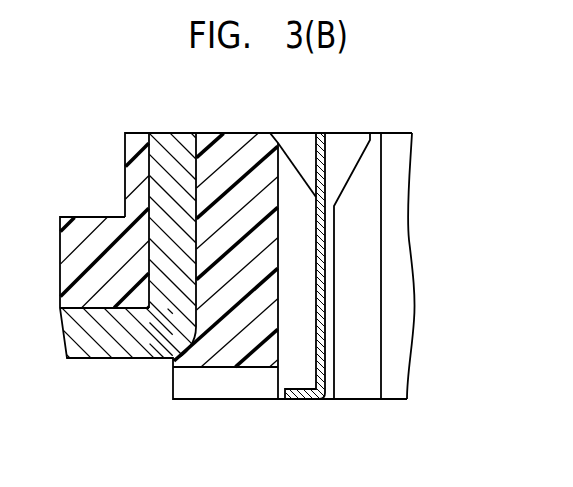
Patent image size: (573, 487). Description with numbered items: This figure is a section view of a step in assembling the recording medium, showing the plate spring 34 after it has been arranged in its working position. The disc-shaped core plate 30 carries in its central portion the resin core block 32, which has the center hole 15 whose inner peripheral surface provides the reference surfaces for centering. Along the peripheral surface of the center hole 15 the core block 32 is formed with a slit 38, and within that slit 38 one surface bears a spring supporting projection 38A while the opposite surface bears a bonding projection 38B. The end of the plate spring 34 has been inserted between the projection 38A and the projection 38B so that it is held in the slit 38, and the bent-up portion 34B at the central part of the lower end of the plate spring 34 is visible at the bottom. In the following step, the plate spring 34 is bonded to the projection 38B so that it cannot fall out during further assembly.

The center hole 15 is at (402, 167).
The core plate 30 is at (87, 347).
The core block 32 is at (237, 148).
The plate spring 34 is at (321, 135).
The bent-up portion 34B is at (305, 402).
The slit 38 is at (376, 237).
The spring supporting projection 38A is at (367, 268).
The bonding projection 38B is at (373, 207).